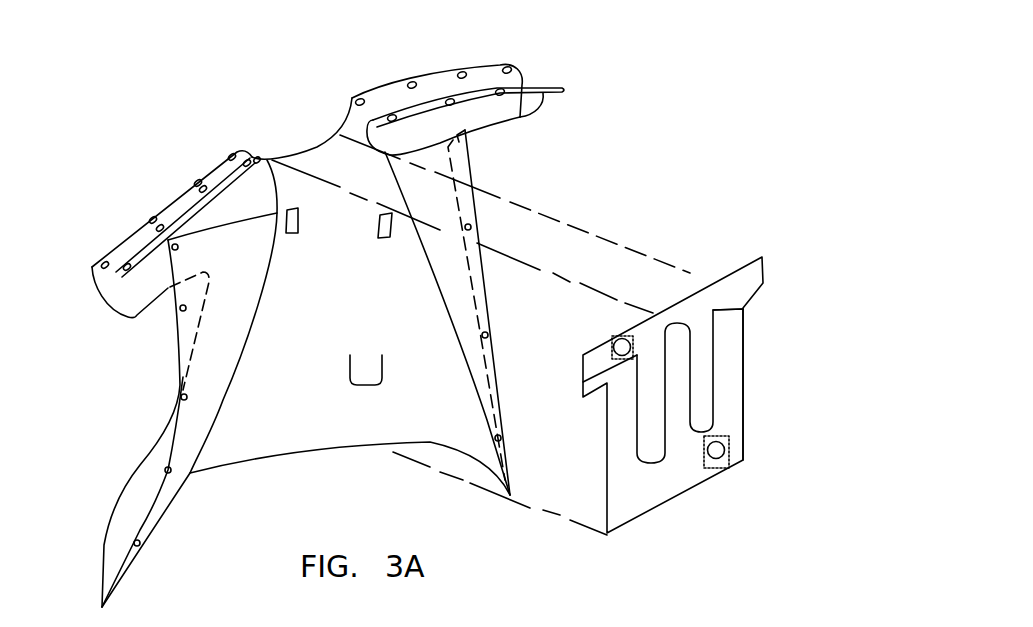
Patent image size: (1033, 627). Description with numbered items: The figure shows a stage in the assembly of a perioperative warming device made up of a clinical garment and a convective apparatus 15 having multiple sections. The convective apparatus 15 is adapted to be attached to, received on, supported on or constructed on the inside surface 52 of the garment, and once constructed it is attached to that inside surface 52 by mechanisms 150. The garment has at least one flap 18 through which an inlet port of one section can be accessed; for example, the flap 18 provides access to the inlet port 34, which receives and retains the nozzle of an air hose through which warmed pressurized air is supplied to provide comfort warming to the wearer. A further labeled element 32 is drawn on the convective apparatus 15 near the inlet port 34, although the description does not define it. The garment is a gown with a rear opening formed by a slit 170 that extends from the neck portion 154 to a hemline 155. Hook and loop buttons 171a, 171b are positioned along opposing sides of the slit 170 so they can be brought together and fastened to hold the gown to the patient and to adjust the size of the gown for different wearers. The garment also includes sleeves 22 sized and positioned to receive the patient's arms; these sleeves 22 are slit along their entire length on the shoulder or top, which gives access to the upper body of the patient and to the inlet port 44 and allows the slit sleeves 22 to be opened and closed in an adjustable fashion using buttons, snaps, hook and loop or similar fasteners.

The convective apparatus 15 is at (717, 395).
The flap 18 is at (370, 348).
The sleeves 22 is at (510, 64).
The plate tab 32 is at (742, 437).
The inlet port 34 is at (727, 466).
The inlet port 44 is at (620, 332).
The inside surface 52 is at (325, 326).
The mechanisms 150 is at (293, 234).
The neck portion 154 is at (318, 147).
The hemline 155 is at (226, 472).
The slit 170 is at (156, 331).
The hook and loop button 171a is at (165, 470).
The hook and loop button 171b is at (490, 335).